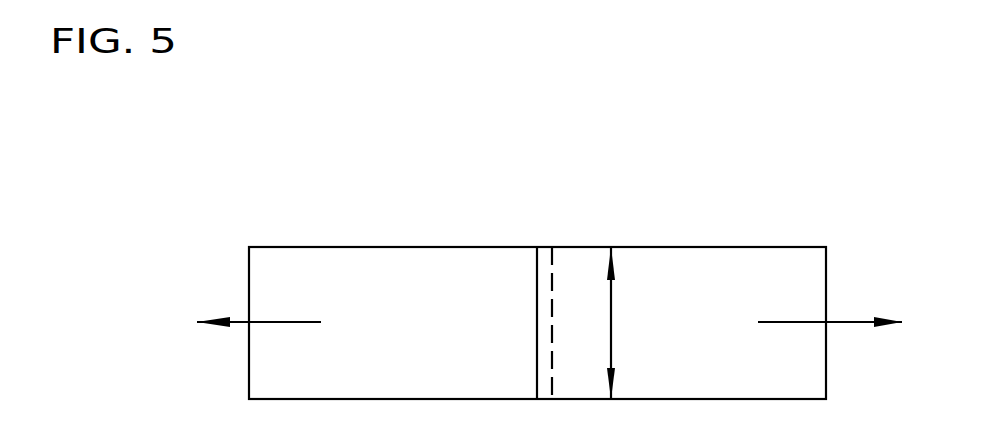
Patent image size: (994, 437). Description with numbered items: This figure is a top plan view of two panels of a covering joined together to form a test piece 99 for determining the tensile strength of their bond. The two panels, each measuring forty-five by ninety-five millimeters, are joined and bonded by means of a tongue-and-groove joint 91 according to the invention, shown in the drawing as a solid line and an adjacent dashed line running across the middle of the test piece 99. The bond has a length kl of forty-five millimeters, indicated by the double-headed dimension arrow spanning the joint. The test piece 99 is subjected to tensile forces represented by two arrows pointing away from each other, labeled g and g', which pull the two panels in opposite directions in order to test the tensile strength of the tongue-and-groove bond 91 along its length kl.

The test piece 99 is at (822, 225).
The tongue-and-groove joint 91 is at (540, 270).
The length of the bond kl is at (611, 322).
The incident beam g is at (273, 318).
The transmitted beam g' is at (814, 321).